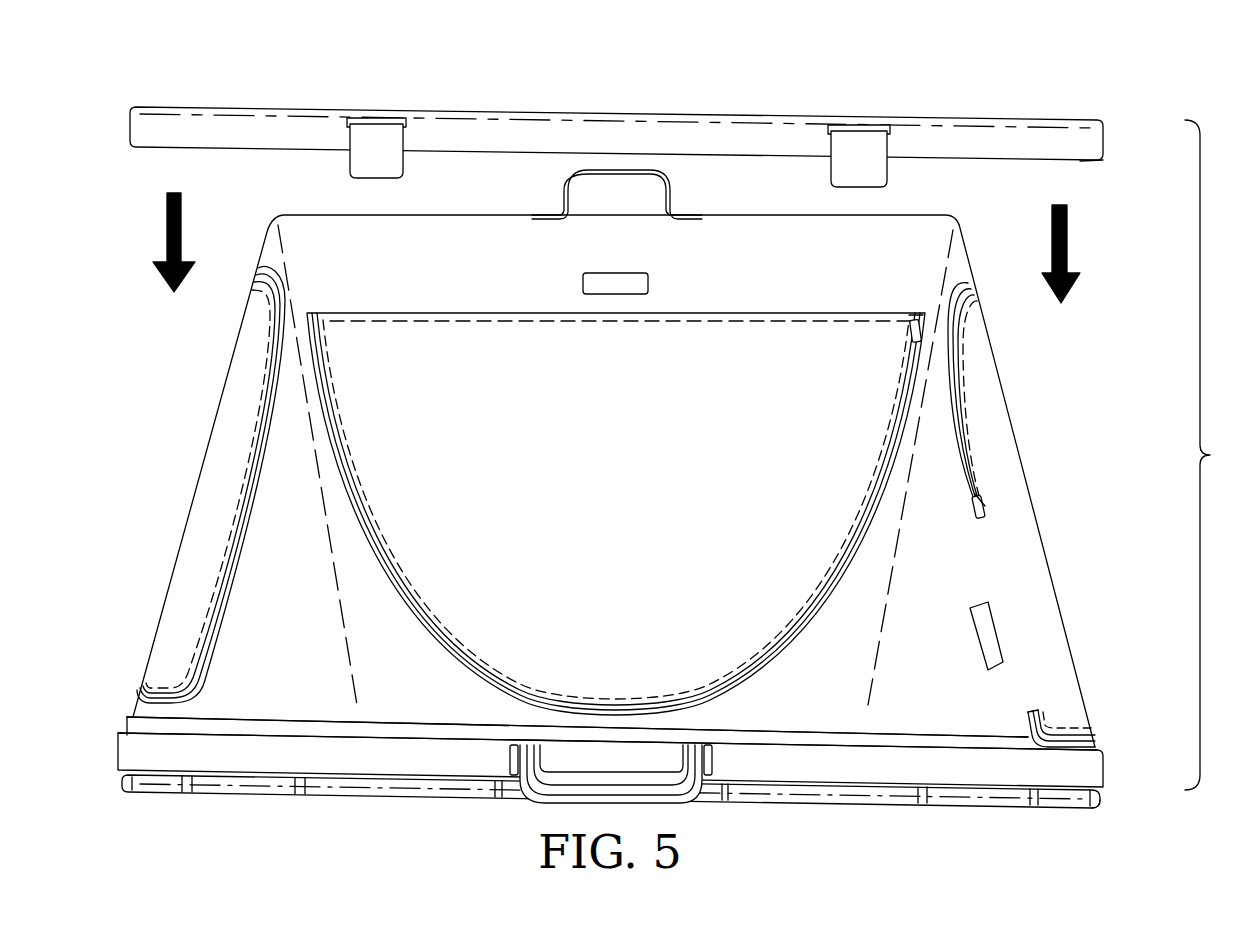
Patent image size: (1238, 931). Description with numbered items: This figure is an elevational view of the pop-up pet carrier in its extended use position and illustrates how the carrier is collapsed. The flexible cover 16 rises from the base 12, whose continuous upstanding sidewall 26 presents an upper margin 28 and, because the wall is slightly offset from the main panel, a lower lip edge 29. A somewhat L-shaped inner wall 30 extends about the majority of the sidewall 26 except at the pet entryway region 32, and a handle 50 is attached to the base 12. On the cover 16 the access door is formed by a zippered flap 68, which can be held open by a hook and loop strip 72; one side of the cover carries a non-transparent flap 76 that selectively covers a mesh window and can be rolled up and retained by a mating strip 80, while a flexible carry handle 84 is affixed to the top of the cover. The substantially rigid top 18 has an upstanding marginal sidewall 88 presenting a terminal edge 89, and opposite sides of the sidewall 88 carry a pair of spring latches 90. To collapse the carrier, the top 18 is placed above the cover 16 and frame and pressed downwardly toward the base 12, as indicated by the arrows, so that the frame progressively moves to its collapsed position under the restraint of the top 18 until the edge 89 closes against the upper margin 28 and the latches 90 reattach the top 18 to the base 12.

The base 12 is at (945, 818).
The flexible cover 16 is at (1052, 578).
The top 18 is at (868, 68).
The sidewall 26 is at (1103, 770).
The upper margin 28 is at (1097, 740).
The lower lip edge 29 is at (1103, 795).
The inner wall 30 is at (890, 745).
The pet entryway region 32 is at (1128, 648).
The handle 50 is at (675, 790).
The zippered flap 68 is at (1018, 455).
The strip 72 is at (978, 628).
The non-transparent flap 76 is at (527, 340).
The strip 80 is at (640, 285).
The flexible carry handle 84 is at (670, 186).
The marginal sidewall 88 is at (588, 135).
The terminal edge 89 is at (1080, 161).
The spring latches 90 is at (365, 152).